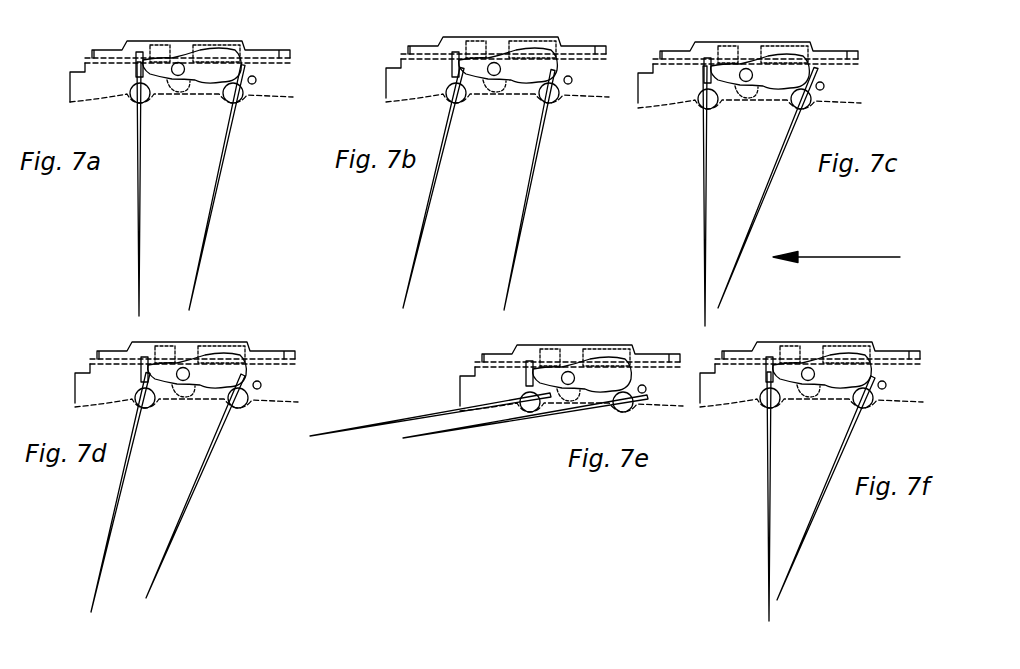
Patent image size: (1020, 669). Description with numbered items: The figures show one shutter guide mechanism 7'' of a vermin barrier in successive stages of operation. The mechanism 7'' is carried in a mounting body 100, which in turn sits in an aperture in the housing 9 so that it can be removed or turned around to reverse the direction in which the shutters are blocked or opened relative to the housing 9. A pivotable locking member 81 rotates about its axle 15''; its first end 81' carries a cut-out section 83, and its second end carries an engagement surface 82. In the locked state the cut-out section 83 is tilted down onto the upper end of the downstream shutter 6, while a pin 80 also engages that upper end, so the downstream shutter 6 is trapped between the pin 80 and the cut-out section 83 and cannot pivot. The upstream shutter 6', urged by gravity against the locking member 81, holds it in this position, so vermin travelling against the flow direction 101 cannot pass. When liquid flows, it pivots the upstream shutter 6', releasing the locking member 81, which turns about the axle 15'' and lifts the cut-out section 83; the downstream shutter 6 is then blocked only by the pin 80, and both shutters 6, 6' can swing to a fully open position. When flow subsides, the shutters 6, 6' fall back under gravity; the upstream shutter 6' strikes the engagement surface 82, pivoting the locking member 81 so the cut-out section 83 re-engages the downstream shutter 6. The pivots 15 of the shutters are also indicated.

In FIG. 7A, the downstream shutter 6 is at (109, 189).
In FIG. 7B, the downstream shutter 6 is at (433, 188).
In FIG. 7C, the downstream shutter 6 is at (679, 196).
In FIG. 7E, the downstream shutter 6 is at (430, 445).
In FIG. 7F, the downstream shutter 6 is at (738, 496).
In FIG. 7A, the upstream shutter 6' is at (227, 187).
In FIG. 7B, the upstream shutter 6' is at (529, 190).
In FIG. 7C, the upstream shutter 6' is at (768, 188).
In FIG. 7E, the upstream shutter 6' is at (525, 446).
In FIG. 7F, the upstream shutter 6' is at (826, 488).
In FIG. 7B, the shutter guide mechanism 7'' is at (511, 31).
In FIG. 7B, the housing 9 is at (417, 47).
In FIG. 7C, the housing 9 is at (848, 68).
In FIG. 7B, the needle pivot bearing 15 is at (519, 120).
In FIG. 7A, the axle 15'' is at (186, 41).
In FIG. 7C, the axle 15'' is at (774, 47).
In FIG. 7F, the axle 15'' is at (839, 340).
In FIG. 7A, the pin 80 is at (130, 74).
In FIG. 7C, the pin 80 is at (695, 104).
In FIG. 7F, the pin 80 is at (768, 356).
In FIG. 7A, the pivotable locking member 81 is at (222, 46).
In FIG. 7C, the pivotable locking member 81 is at (810, 54).
In FIG. 7F, the pivotable locking member 81 is at (845, 349).
In FIG. 7A, the first end 81' is at (117, 38).
In FIG. 7A, the engagement surface 82 is at (240, 82).
In FIG. 7A, the cut-out section 83 is at (137, 80).
In FIG. 7C, the cut-out section 83 is at (705, 57).
In FIG. 7F, the cut-out section 83 is at (775, 360).
In FIG. 7B, the mounting body 100 is at (577, 46).
In FIG. 7C, the flow direction 101 is at (858, 257).